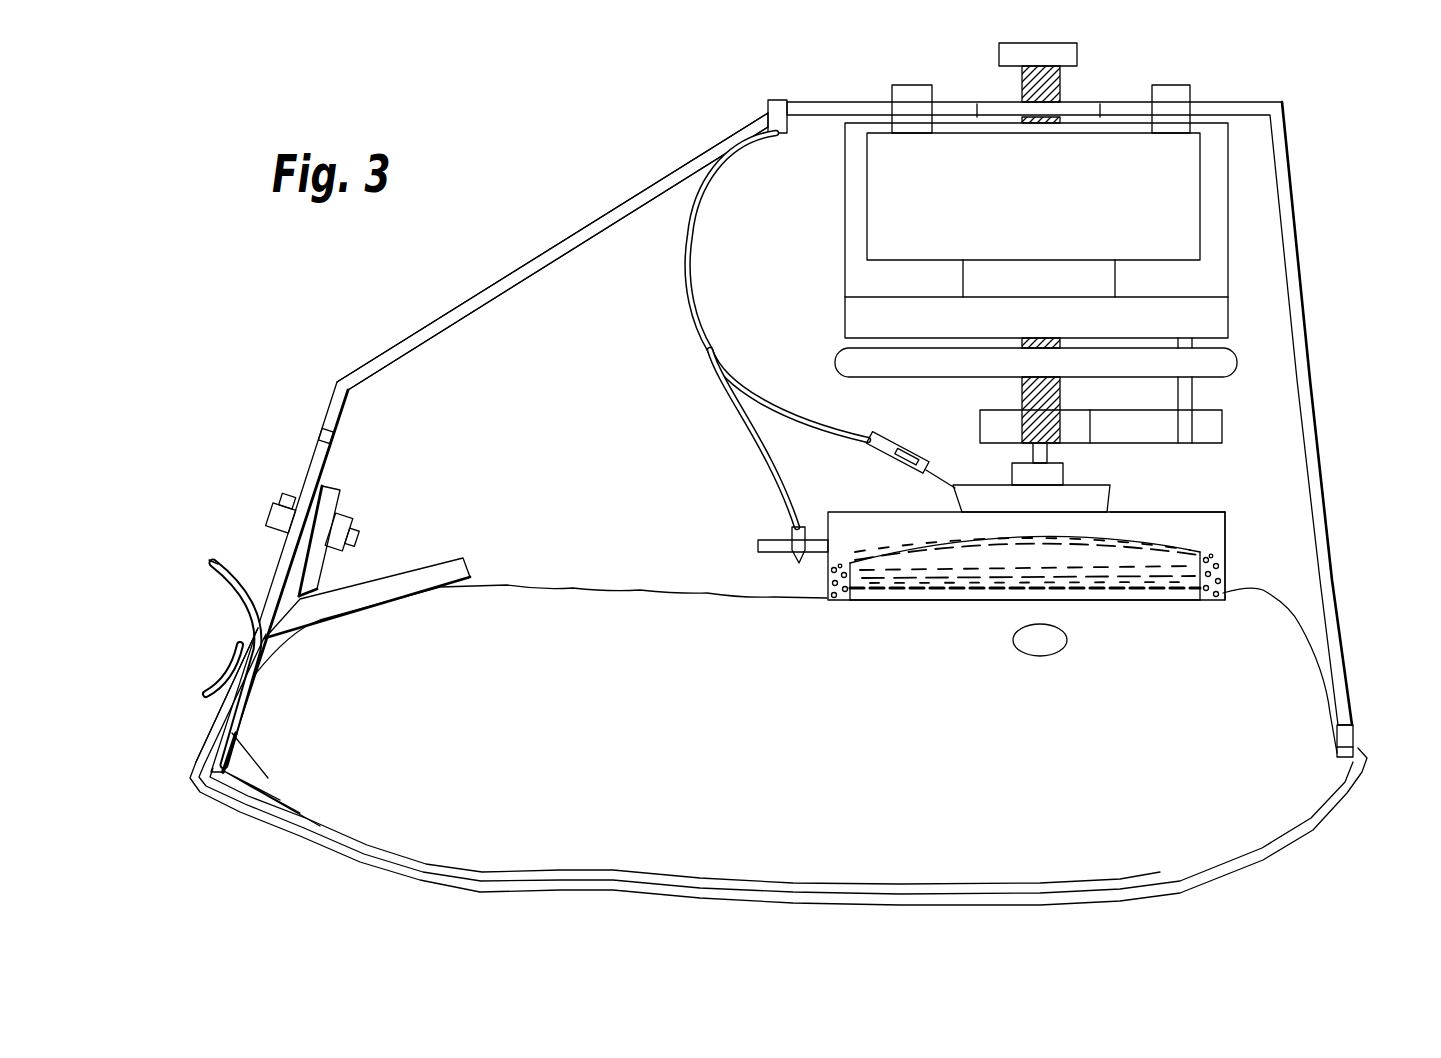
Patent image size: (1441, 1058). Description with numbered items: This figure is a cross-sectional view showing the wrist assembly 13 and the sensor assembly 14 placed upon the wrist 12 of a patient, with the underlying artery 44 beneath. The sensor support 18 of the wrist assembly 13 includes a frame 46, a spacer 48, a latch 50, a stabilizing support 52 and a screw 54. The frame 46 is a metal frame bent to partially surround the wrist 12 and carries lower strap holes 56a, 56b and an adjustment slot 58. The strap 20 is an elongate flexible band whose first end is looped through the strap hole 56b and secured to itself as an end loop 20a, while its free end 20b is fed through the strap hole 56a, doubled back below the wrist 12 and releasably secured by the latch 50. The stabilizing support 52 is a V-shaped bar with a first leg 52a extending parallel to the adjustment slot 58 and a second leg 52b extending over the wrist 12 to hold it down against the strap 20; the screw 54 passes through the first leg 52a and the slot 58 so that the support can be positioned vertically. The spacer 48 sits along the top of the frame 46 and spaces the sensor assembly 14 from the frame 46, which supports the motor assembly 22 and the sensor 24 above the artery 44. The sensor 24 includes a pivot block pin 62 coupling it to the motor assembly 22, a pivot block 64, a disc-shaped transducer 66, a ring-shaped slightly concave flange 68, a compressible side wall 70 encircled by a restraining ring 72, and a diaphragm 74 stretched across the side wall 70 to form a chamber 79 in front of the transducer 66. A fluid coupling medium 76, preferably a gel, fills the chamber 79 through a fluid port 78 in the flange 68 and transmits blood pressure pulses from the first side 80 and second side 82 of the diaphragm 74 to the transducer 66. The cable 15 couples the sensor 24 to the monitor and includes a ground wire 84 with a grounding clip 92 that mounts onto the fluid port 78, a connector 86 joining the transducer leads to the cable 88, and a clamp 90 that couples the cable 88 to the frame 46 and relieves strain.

The wrist 12 is at (713, 736).
The wrist assembly 13 is at (552, 244).
The sensor assembly 14 is at (808, 185).
The cable 15 is at (682, 287).
The sensor support 18 is at (463, 301).
The strap 20 is at (340, 853).
The end loop 20a is at (262, 782).
The free end 20b is at (211, 737).
The motor assembly 22 is at (842, 270).
The sensor 24 is at (1183, 506).
The artery 44 is at (1062, 653).
The frame 46 is at (513, 270).
The spacer 48 is at (893, 122).
The latch 50 is at (206, 684).
The stabilizing support 52 is at (361, 578).
The first leg 52a is at (328, 486).
The second leg 52b is at (417, 580).
The screw 54 is at (277, 505).
The strap hole 56a is at (1348, 731).
The strap hole 56b is at (224, 750).
The adjustment slot 58 is at (333, 432).
The pivot block pin 62 is at (1042, 455).
The pivot block 64 is at (1011, 476).
The transducer 66 is at (1100, 493).
The flange 68 is at (1205, 530).
The side wall 70 is at (1222, 563).
The restraining ring 72 is at (1274, 594).
The diaphragm 74 is at (1040, 606).
The fluid coupling medium 76 is at (1026, 560).
The fluid port 78 is at (768, 540).
The chamber 79 is at (915, 572).
The first side 80 is at (903, 600).
The second side 82 is at (938, 468).
The ground wire 84 is at (786, 498).
The connector 86 is at (892, 436).
The cable 88 is at (706, 357).
The clamp 90 is at (776, 98).
The grounding clip 92 is at (790, 560).